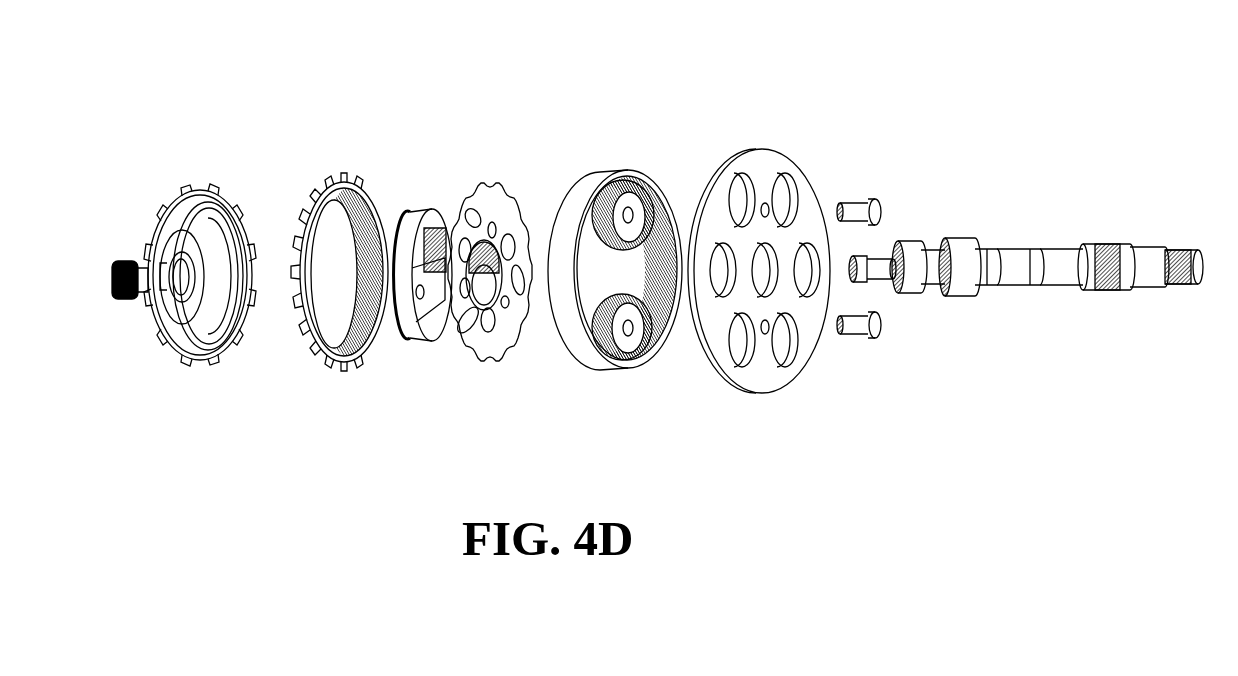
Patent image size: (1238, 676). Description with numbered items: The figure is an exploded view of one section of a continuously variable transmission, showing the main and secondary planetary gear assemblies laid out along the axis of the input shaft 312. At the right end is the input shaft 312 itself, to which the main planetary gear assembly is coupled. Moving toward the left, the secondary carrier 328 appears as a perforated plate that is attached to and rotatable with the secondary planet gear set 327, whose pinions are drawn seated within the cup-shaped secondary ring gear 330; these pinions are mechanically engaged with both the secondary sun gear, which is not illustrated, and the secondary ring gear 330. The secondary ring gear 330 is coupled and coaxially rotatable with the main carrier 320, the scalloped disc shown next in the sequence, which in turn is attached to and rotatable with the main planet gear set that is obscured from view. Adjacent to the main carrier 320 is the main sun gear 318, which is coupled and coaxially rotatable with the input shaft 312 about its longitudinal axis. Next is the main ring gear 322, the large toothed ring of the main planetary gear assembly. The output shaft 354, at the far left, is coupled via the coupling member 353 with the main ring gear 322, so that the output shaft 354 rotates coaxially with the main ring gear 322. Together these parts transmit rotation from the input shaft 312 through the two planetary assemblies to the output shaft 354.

The input shaft 312 is at (1060, 304).
The main sun gear 318 is at (427, 208).
The main carrier 320 is at (478, 185).
The main ring gear 322 is at (335, 190).
The secondary planet gear set 327 is at (630, 317).
The secondary carrier 328 is at (752, 152).
The secondary ring gear 330 is at (595, 170).
The coupling member 353 is at (193, 210).
The output shaft 354 is at (130, 262).